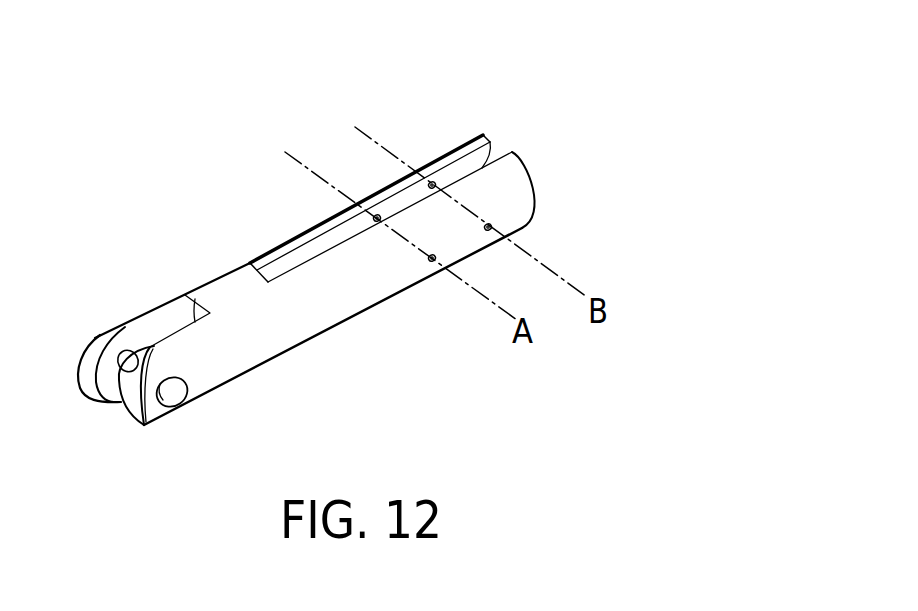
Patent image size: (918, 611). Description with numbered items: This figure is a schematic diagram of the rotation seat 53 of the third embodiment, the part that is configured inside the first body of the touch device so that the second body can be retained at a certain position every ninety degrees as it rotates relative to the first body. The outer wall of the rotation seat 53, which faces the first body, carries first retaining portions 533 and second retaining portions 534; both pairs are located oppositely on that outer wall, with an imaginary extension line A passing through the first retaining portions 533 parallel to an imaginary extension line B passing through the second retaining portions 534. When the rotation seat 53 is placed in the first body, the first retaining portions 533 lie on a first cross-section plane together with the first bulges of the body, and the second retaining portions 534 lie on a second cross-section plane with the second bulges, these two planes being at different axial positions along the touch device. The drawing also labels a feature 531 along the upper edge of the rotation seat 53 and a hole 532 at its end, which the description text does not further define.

The rotation seat 53 is at (556, 114).
The rail 531 is at (282, 246).
The pivot hole 532 is at (172, 390).
The first retaining portions 533 is at (377, 221).
The second retaining portions 534 is at (435, 185).